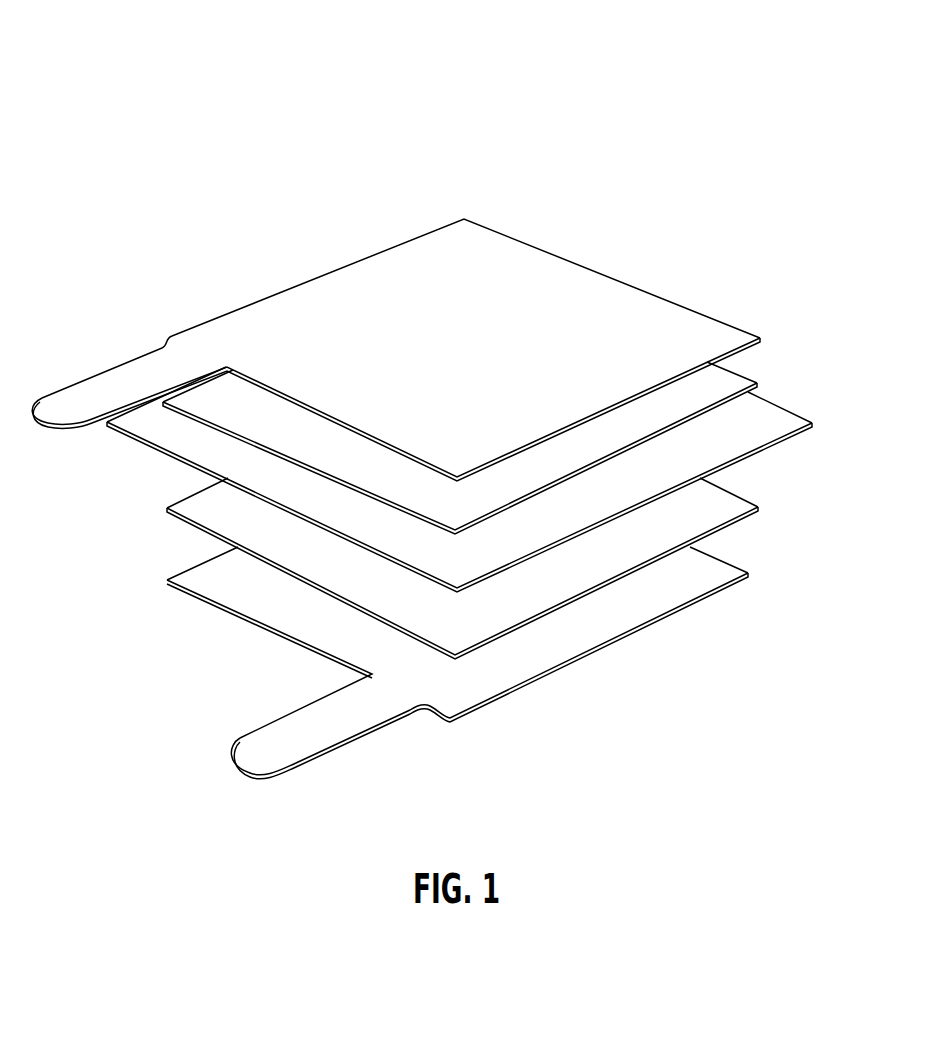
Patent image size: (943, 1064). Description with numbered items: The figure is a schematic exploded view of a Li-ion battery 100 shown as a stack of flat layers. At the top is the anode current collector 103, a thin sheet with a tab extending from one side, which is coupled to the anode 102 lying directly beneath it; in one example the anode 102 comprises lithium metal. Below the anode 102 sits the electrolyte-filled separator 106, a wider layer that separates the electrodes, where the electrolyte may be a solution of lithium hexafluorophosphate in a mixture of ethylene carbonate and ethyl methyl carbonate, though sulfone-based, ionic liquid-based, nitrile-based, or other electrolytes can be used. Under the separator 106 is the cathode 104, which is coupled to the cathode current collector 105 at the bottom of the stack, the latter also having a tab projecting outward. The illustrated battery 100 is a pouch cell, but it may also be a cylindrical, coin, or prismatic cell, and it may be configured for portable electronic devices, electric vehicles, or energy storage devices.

The Li-ion battery 100 is at (646, 96).
The anode 102 is at (728, 381).
The anode current collector 103 is at (249, 320).
The cathode 104 is at (714, 517).
The cathode current collector 105 is at (527, 668).
The electrolyte-filled separator 106 is at (160, 430).